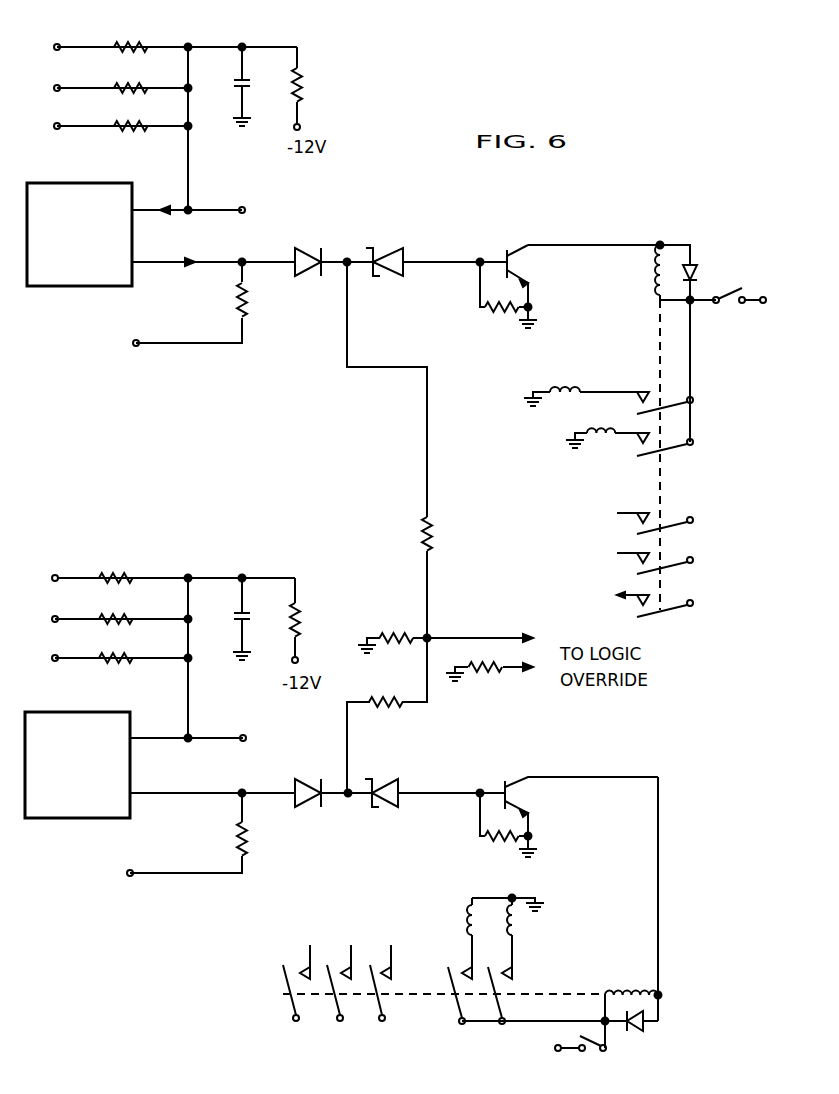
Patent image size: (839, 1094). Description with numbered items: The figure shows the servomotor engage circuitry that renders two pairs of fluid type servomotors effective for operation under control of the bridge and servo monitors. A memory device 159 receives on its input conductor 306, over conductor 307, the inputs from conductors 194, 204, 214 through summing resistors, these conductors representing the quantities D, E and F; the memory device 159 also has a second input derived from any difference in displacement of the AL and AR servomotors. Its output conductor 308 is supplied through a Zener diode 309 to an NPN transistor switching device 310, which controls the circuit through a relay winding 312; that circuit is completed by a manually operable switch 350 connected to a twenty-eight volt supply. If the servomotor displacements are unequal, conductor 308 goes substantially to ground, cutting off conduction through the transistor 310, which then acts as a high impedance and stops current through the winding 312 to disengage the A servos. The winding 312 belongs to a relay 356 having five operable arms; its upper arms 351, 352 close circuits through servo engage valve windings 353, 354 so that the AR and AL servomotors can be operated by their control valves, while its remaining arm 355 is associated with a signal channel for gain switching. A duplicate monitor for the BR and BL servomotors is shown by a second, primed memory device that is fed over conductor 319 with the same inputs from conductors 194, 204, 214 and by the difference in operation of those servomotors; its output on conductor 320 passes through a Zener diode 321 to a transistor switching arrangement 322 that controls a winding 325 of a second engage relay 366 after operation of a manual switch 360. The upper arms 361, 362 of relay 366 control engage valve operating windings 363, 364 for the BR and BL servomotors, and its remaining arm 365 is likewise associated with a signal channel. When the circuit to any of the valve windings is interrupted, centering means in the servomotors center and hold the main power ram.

The conductor 194 is at (90, 47).
The conductor 204 is at (72, 88).
The conductor 214 is at (70, 126).
The memory device 159 is at (91, 182).
The input conductor 306 is at (177, 209).
The conductor 307 is at (190, 180).
The output conductor 308 is at (162, 261).
The Zener diode 309 is at (389, 253).
The switching device 310 is at (502, 252).
The relay winding 312 is at (654, 266).
The conductor 319 is at (190, 713).
The conductor 320 is at (157, 793).
The Zener diode 321 is at (384, 778).
The transistor switching arrangement 322 is at (520, 768).
The winding 325 is at (628, 984).
The manually operable switch 350 is at (730, 276).
The relay arm 351 is at (670, 453).
The relay arm 352 is at (632, 411).
The servo engage valve winding 353 is at (592, 427).
The servo engage valve winding 354 is at (582, 388).
The relay arm 355 is at (681, 529).
The relay 356 is at (630, 426).
The manual switch 360 is at (604, 1054).
The relay arm 361 is at (457, 1004).
The relay arm 362 is at (508, 1004).
The engage valve operating winding 363 is at (464, 922).
The engage valve operating winding 364 is at (517, 934).
The relay arm 365 is at (378, 1013).
The relay 366 is at (472, 972).